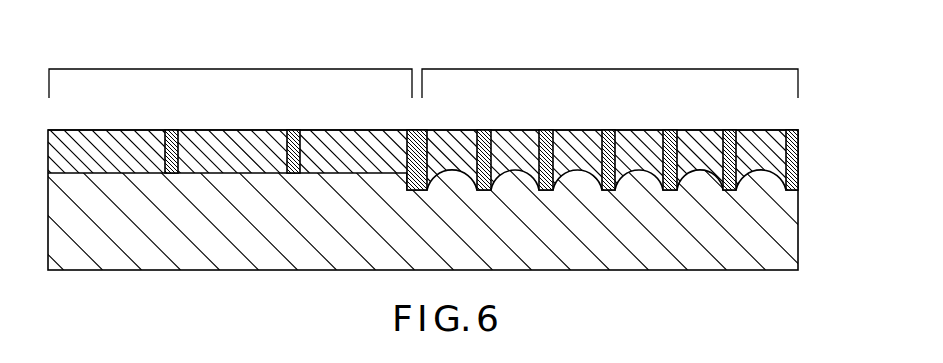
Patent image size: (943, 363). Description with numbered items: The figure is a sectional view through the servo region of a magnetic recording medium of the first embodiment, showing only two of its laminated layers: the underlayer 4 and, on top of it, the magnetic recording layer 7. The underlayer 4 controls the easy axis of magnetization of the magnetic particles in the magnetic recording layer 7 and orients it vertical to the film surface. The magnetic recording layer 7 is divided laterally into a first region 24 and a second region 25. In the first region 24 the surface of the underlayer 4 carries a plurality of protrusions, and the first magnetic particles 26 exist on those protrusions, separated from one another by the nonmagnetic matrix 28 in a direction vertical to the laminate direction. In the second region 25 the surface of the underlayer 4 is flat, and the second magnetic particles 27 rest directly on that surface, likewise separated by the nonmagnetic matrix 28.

The underlayer 4 is at (784, 240).
The magnetic recording layer 7 is at (804, 161).
The first region 24 is at (613, 69).
The second region 25 is at (228, 69).
The first magnetic particles 26 is at (517, 142).
The second magnetic particles 27 is at (238, 142).
The nonmagnetic matrix 28 is at (177, 136).